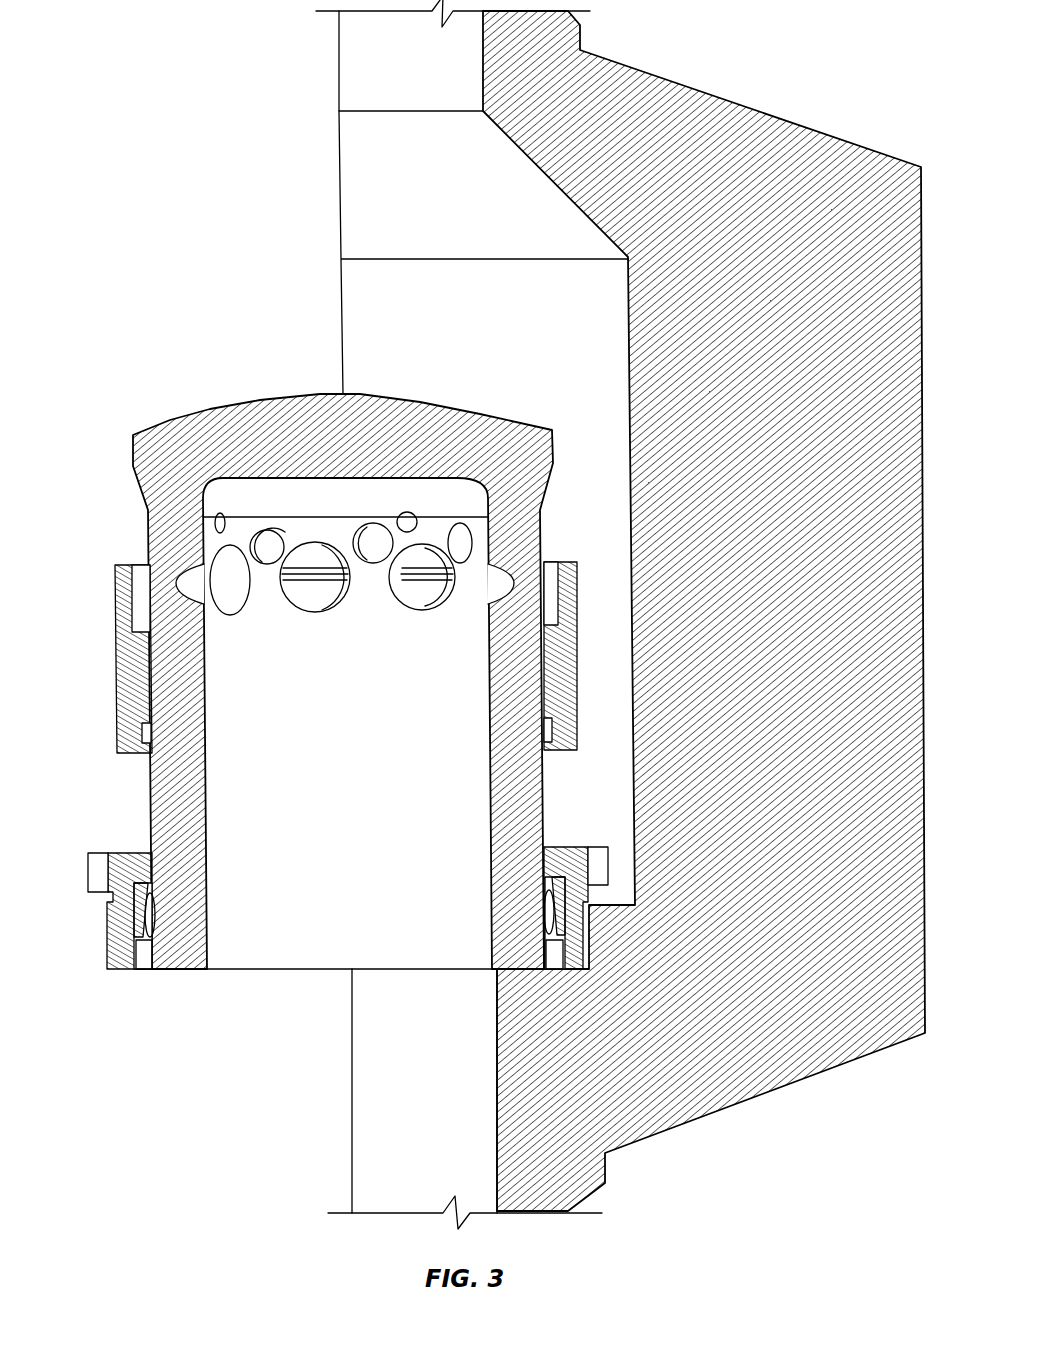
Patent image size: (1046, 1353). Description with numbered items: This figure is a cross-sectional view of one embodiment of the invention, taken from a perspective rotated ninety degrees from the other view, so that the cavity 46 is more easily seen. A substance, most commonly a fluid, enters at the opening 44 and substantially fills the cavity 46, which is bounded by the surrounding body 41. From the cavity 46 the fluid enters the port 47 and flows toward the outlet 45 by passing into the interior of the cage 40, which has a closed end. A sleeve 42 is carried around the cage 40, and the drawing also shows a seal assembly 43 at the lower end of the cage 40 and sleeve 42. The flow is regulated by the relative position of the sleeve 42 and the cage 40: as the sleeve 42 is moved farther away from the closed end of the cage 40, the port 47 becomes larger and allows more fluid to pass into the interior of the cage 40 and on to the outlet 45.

The cage 40 is at (277, 400).
The body 41 is at (653, 75).
The sleeve 42 is at (122, 563).
The seal assembly 43 is at (123, 963).
The opening 44 is at (350, 87).
The outlet 45 is at (357, 1160).
The cavity 46 is at (340, 186).
The port 47 is at (322, 545).